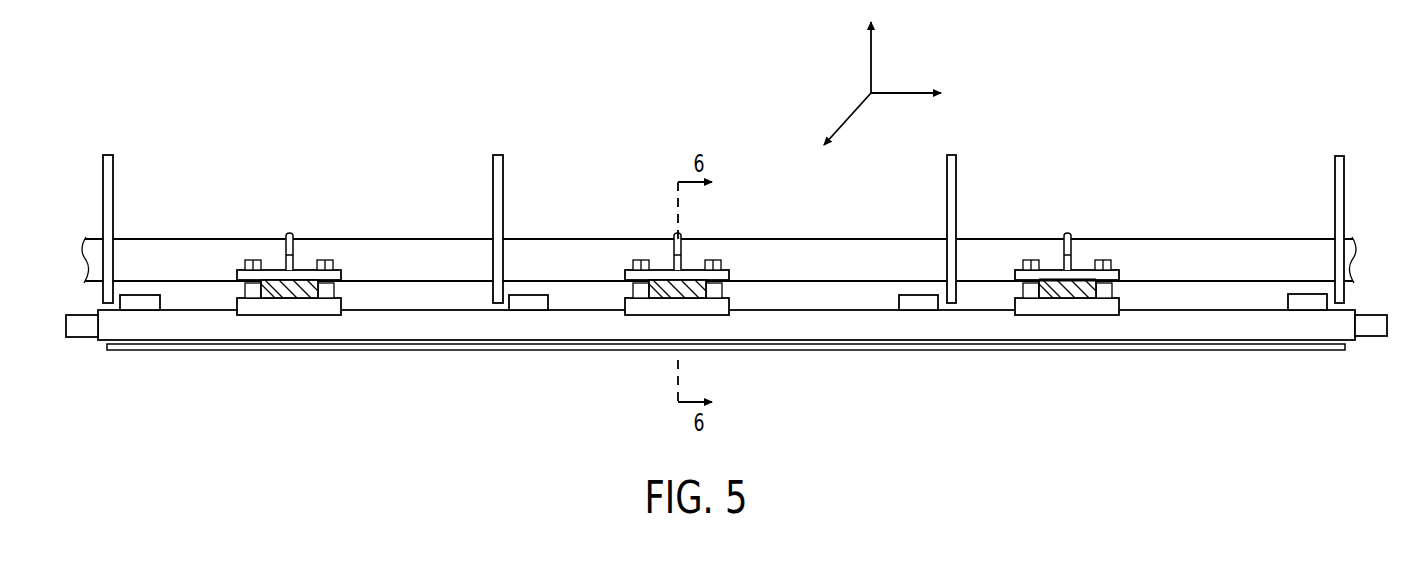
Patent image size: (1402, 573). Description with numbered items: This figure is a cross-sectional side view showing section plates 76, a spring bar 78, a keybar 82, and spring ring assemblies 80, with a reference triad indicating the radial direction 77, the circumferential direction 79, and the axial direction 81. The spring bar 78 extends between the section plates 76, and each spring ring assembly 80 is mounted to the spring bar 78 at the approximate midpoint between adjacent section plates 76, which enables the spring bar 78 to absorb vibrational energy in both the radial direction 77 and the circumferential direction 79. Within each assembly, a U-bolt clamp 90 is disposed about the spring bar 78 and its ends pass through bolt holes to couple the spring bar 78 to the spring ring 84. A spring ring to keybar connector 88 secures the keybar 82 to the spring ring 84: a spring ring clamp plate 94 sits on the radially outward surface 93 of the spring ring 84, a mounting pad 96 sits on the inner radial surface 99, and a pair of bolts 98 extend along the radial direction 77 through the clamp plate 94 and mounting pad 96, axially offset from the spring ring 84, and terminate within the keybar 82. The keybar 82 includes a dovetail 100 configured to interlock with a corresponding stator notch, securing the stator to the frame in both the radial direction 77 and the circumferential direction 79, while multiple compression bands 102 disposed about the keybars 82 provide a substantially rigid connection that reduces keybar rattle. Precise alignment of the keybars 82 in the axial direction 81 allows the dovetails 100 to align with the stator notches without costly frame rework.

The section plates 76 is at (113, 181).
The radial direction 77 is at (871, 62).
The spring bar 78 is at (414, 252).
The circumferential direction 79 is at (850, 112).
The spring ring assembly 80 is at (1041, 174).
The axial direction 81 is at (900, 93).
The keybar 82 is at (1340, 319).
The spring ring 84 is at (1041, 290).
The spring ring to keybar connector 88 is at (1000, 292).
The U-bolt clamp 90 is at (1067, 233).
The radially outward surface 93 is at (1083, 278).
The spring ring clamp plate 94 is at (1118, 274).
The mounting pad 96 is at (1025, 305).
The bolts 98 is at (1030, 261).
The inner radial surface 99 is at (1066, 299).
The dovetail 100 is at (1149, 345).
The compression bands 102 is at (160, 303).